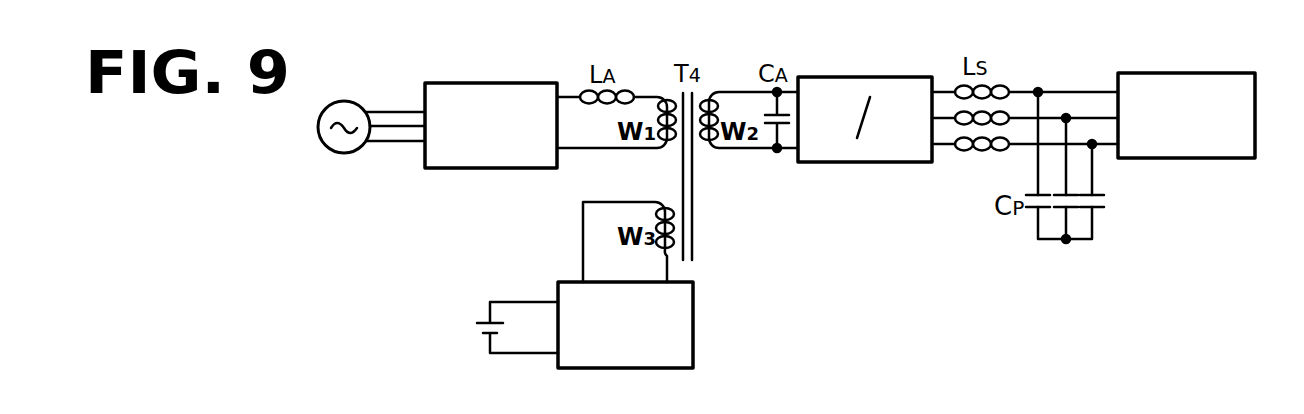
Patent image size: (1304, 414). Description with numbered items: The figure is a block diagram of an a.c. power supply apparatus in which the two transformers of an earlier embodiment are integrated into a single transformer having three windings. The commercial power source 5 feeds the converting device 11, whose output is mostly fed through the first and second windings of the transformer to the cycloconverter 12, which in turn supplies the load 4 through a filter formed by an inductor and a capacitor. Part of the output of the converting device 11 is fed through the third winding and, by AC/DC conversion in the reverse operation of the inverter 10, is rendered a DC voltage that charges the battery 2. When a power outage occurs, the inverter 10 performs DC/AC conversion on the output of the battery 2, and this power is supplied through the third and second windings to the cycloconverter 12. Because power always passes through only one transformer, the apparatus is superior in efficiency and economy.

The commercial power source 5 is at (347, 102).
The converting device 11 is at (520, 83).
The cycloconverter 12 is at (884, 77).
The load 4 is at (1206, 73).
The inverter 10 is at (694, 325).
The battery 2 is at (478, 330).